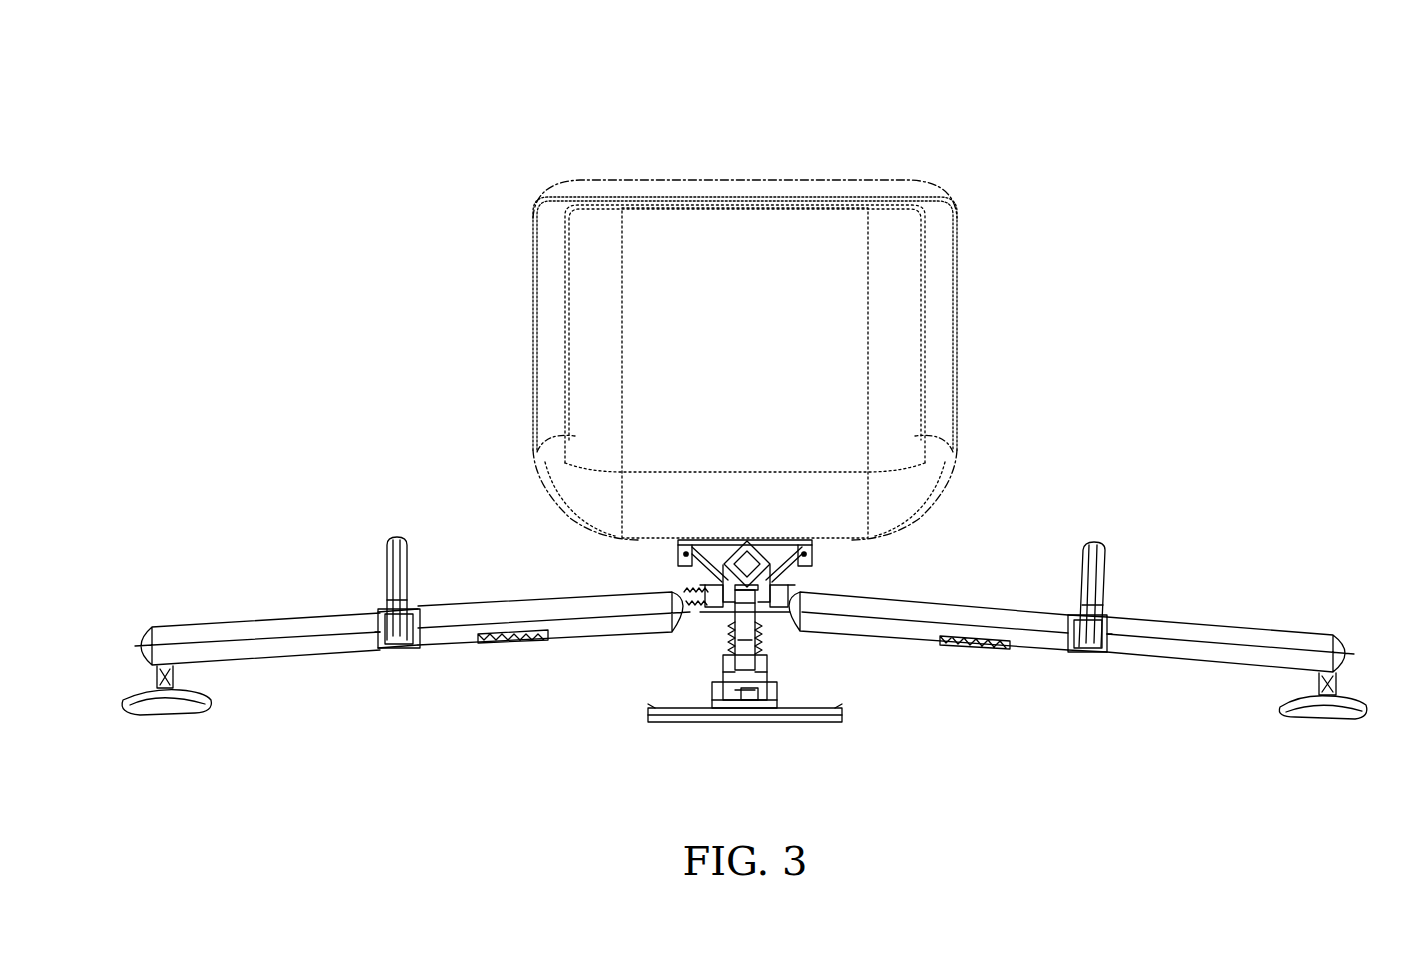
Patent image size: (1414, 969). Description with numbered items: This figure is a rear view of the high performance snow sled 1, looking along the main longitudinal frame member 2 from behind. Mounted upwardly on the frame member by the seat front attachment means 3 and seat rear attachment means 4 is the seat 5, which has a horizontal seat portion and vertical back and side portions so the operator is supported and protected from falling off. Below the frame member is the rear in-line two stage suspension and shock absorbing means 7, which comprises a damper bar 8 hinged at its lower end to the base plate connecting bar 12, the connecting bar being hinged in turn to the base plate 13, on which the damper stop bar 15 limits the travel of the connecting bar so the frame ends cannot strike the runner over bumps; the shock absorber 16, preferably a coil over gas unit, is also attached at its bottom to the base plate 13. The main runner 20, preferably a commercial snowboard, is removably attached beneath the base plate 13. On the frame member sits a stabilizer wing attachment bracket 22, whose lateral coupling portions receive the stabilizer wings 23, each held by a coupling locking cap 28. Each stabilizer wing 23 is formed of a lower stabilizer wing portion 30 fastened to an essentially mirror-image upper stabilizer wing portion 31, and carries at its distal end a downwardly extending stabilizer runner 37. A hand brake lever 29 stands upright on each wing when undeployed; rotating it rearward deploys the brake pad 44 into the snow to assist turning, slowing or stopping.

The high performance snow sled 1 is at (790, 125).
The main longitudinal frame member 2 is at (746, 560).
The seat front attachment means 3 is at (687, 552).
The seat rear attachment means 4 is at (760, 583).
The seat 5 is at (894, 272).
The rear in-line two stage suspension and shock absorbing means 7 is at (776, 641).
The damper bar 8 is at (740, 612).
The base plate connecting bar 12 is at (768, 672).
The base plate 13 is at (776, 700).
The damper stop bar 15 is at (745, 700).
The shock absorber 16 is at (728, 642).
The main runner 20 is at (700, 723).
The stabilizer wing attachment bracket 22 is at (700, 614).
The stabilizer wing 23 is at (363, 664).
The coupling locking cap 28 is at (688, 595).
The hand brake lever 29 is at (390, 553).
The lower stabilizer wing portion 30 is at (310, 655).
The upper stabilizer wing portion 31 is at (243, 630).
The stabilizer runner 37 is at (205, 705).
The brake pad 44 is at (510, 645).